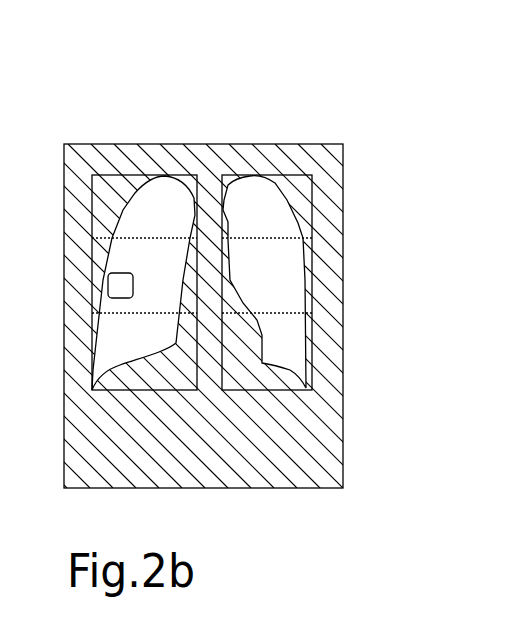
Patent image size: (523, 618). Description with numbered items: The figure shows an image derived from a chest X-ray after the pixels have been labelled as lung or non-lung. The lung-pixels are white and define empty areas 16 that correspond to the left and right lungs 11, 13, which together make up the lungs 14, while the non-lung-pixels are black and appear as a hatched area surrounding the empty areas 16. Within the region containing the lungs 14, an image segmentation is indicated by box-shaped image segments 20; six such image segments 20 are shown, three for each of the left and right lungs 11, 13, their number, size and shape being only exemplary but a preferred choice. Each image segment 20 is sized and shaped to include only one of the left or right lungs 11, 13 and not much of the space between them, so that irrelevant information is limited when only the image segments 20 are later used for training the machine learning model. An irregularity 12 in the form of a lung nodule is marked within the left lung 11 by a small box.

The lungs 14 is at (287, 73).
The left lung 11 is at (137, 185).
The irregularity 12 is at (121, 299).
The right lung 13 is at (250, 176).
The empty areas 16 is at (163, 190).
The image segments 20 is at (98, 216).